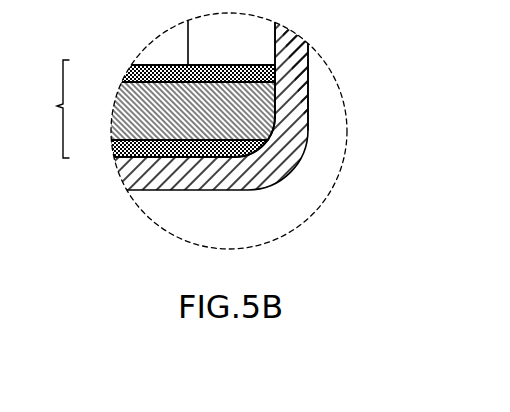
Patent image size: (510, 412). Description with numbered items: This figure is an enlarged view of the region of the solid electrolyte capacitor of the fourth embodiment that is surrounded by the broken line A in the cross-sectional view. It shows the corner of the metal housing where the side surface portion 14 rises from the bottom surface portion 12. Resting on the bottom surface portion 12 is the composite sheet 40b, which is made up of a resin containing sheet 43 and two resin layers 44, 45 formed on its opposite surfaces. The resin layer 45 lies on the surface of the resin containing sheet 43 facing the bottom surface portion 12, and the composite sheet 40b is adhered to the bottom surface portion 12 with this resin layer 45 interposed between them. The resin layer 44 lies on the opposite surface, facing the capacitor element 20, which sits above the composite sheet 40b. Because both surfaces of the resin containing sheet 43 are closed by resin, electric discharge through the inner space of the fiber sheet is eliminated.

The broken line A is at (345, 132).
The bottom surface portion 12 is at (206, 191).
The side surface portion 14 is at (297, 68).
The capacitor element 20 is at (180, 42).
The composite sheet 40b is at (43, 109).
The resin containing sheet 43 is at (132, 108).
The resin layer 44 is at (133, 73).
The resin layer 45 is at (118, 152).